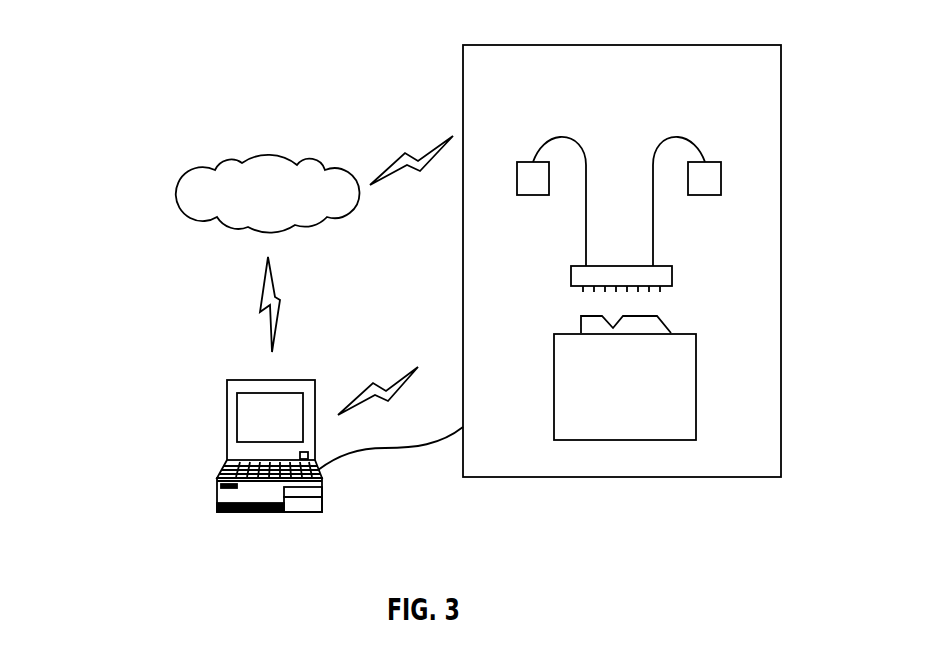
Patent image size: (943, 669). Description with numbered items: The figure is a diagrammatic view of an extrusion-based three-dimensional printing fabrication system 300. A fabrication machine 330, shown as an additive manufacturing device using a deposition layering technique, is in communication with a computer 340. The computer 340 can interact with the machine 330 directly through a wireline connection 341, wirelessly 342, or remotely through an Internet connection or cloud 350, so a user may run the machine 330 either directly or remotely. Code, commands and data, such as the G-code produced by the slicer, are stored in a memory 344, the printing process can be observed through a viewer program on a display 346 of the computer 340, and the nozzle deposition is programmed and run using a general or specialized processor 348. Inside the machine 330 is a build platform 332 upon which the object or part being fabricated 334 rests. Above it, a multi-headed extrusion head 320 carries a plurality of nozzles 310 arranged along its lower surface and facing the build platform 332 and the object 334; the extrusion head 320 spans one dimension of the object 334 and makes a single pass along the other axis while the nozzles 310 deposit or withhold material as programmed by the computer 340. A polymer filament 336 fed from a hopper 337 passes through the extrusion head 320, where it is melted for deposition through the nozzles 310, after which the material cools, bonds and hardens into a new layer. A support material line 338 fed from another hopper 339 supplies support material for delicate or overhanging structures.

The fabrication system 300 is at (187, 101).
The nozzles 310 is at (664, 297).
The extrusion head 320 is at (660, 291).
The fabrication machine 330 is at (725, 45).
The build platform 332 is at (697, 385).
The object 334 is at (580, 327).
The filament 336 is at (578, 138).
The hopper 337 is at (530, 196).
The support material line 338 is at (652, 213).
The hopper 339 is at (707, 196).
The computer 340 is at (270, 434).
The wireline connection 341 is at (385, 446).
The wireless connection 342 is at (378, 402).
The memory 344 is at (323, 489).
The display 346 is at (290, 393).
The processor 348 is at (323, 503).
The cloud 350 is at (179, 195).